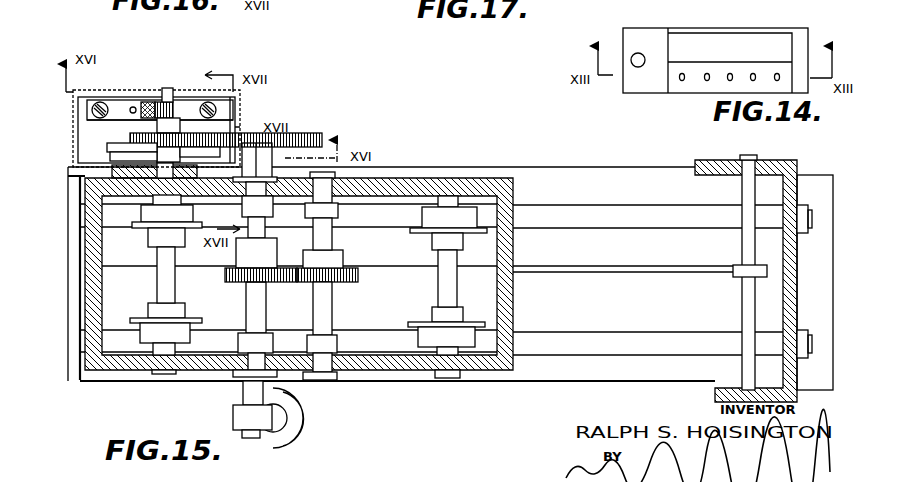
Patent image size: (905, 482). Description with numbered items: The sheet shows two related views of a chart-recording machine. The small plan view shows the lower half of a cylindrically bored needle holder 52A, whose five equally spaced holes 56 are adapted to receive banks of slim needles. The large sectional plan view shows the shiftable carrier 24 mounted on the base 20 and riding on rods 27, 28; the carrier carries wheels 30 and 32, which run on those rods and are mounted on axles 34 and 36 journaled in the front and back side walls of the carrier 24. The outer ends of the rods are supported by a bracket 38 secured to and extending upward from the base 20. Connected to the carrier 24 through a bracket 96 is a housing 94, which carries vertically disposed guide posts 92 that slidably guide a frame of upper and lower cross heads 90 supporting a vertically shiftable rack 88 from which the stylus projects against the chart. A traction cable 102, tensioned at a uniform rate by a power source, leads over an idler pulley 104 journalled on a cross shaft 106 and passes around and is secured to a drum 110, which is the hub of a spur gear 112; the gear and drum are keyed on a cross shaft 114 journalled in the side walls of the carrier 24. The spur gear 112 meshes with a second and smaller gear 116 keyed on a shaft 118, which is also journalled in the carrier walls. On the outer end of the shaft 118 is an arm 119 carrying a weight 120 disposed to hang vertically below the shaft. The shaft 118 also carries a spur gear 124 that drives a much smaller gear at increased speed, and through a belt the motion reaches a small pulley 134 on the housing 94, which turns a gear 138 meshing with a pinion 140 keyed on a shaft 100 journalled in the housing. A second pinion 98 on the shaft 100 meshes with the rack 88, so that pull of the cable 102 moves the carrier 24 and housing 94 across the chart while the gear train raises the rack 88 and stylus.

In FIG. 15, the base 20 is at (553, 368).
In FIG. 15, the shiftable carrier 24 is at (410, 363).
In FIG. 15, the rod 27 is at (612, 343).
In FIG. 15, the rod 28 is at (650, 213).
In FIG. 15, the wheel 30 is at (148, 323).
In FIG. 15, the wheel 32 is at (452, 343).
In FIG. 15, the axle 34 is at (167, 285).
In FIG. 15, the axle 36 is at (448, 285).
In FIG. 15, the bracket 38 is at (783, 303).
In FIG. 14, the lower half of needle holder 52A is at (752, 42).
In FIG. 14, the holes 56 is at (683, 80).
In FIG. 15, the rack 88 is at (147, 100).
In FIG. 15, the cross heads 90 is at (155, 118).
In FIG. 15, the guide posts 92 is at (235, 100).
In FIG. 15, the housing 94 is at (118, 98).
In FIG. 15, the bracket 96 is at (133, 170).
In FIG. 15, the pinion 98 is at (160, 110).
In FIG. 15, the shaft 100 is at (193, 197).
In FIG. 15, the traction cable 102 is at (598, 268).
In FIG. 15, the idler pulley 104 is at (737, 277).
In FIG. 15, the cross shaft 106 is at (753, 307).
In FIG. 15, the drum 110 is at (335, 255).
In FIG. 15, the spur gear 112 is at (360, 276).
In FIG. 15, the cross shaft 114 is at (322, 312).
In FIG. 15, the gear 116 is at (268, 279).
In FIG. 15, the shaft 118 is at (253, 307).
In FIG. 15, the arm 119 is at (245, 432).
In FIG. 15, the weight 120 is at (308, 420).
In FIG. 15, the spur gear 124 is at (290, 137).
In FIG. 15, the pulley 134 is at (138, 144).
In FIG. 15, the gear 138 is at (140, 133).
In FIG. 15, the pinion 140 is at (240, 110).